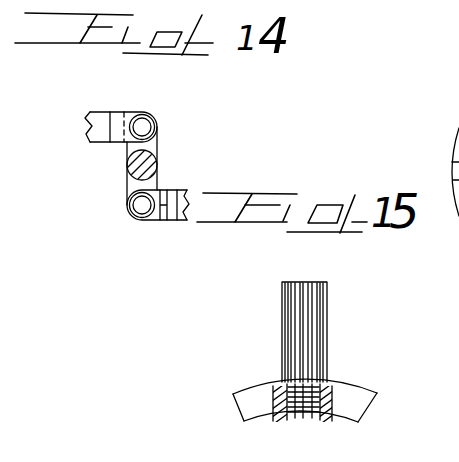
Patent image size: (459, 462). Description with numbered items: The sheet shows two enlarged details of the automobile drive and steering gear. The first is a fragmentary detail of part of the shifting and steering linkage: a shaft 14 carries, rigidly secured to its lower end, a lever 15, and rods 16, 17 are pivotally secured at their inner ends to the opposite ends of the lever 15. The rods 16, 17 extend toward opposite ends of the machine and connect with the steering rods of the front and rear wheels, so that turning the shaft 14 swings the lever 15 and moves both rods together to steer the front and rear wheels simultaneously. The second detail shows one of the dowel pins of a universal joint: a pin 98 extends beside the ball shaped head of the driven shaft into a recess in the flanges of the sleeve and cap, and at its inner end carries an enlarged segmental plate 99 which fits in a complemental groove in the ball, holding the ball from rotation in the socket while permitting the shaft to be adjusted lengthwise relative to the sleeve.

In FIG. 14, the shaft 14 is at (156, 183).
In FIG. 14, the lever 15 is at (170, 178).
In FIG. 14, the rod 16 is at (92, 130).
In FIG. 14, the rod 17 is at (183, 222).
In FIG. 15, the pin 98 is at (312, 340).
In FIG. 15, the segmental plate 99 is at (353, 403).